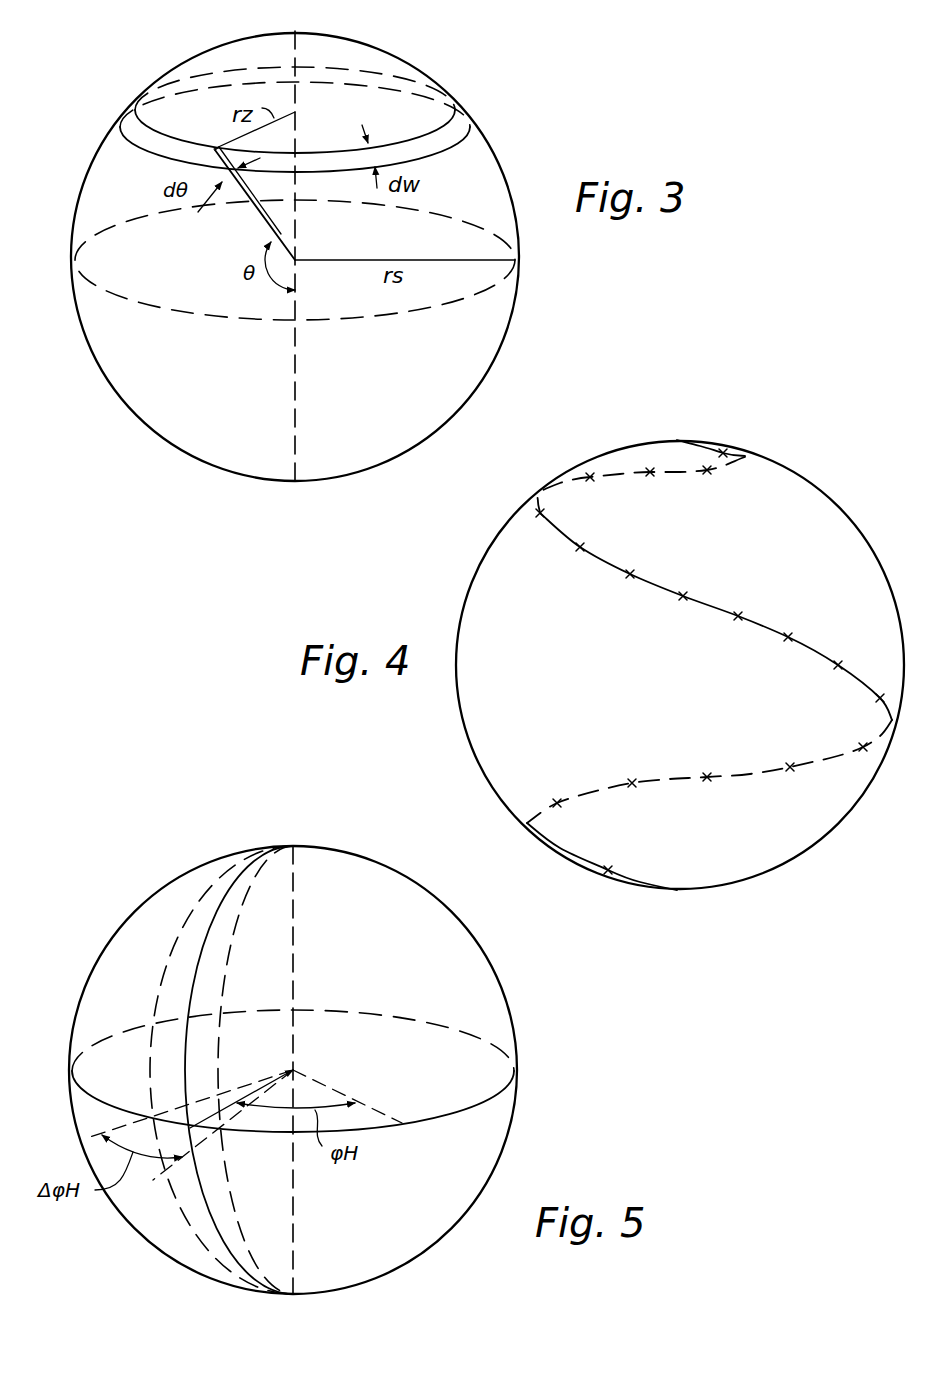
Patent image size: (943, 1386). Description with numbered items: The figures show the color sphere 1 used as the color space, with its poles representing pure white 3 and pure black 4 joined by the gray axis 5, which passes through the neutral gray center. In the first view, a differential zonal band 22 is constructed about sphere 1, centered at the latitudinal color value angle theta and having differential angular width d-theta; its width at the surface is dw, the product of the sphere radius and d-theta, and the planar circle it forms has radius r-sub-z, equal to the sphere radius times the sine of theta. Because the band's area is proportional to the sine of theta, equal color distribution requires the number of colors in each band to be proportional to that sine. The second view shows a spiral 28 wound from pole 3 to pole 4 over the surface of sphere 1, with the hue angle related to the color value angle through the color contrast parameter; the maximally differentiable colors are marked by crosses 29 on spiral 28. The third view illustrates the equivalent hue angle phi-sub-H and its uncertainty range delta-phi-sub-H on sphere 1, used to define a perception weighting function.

In FIG. 3, the sphere 1 is at (157, 439).
In FIG. 4, the sphere 1 is at (832, 496).
In FIG. 5, the sphere 1 is at (506, 993).
In FIG. 3, the pure white pole 3 is at (293, 33).
In FIG. 4, the pure white pole 3 is at (680, 440).
In FIG. 3, the pure black pole 4 is at (294, 483).
In FIG. 4, the pure black pole 4 is at (677, 890).
In FIG. 3, the gray axis 5 is at (296, 388).
In FIG. 3, the differential zonal band 22 is at (458, 112).
In FIG. 4, the spiral 28 is at (707, 602).
In FIG. 4, the crosses 29 is at (786, 642).